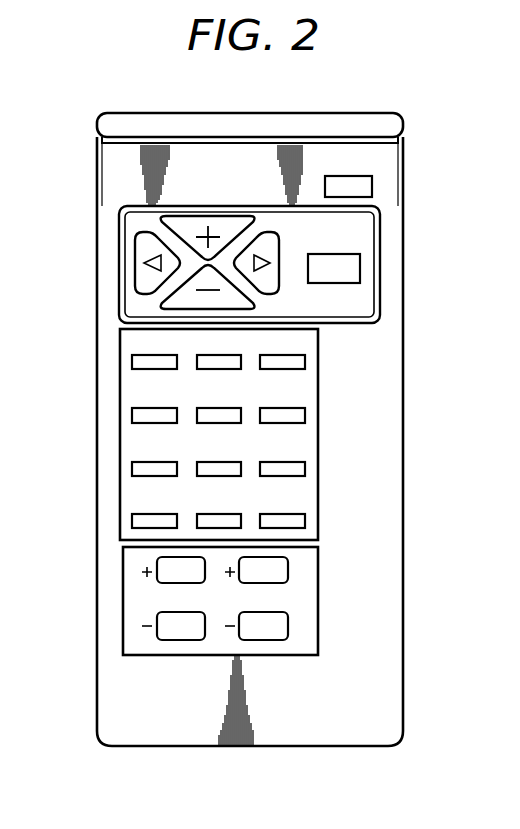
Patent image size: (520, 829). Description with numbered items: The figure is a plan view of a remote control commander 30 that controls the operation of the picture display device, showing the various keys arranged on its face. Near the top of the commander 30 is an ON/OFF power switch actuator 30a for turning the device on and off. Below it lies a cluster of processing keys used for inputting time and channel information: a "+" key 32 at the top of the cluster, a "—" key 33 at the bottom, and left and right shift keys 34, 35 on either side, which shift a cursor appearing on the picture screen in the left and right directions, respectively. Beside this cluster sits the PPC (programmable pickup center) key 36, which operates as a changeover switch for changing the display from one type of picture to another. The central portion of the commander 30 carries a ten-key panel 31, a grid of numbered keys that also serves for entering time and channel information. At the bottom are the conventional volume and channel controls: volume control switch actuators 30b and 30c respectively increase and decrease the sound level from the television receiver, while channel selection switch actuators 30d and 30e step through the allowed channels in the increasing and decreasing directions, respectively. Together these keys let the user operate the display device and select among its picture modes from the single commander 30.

The remote control commander 30 is at (269, 101).
The ON/OFF power switch actuator 30a is at (372, 186).
The volume control switch actuator 30b is at (157, 561).
The volume control switch actuator 30c is at (157, 617).
The channel selection switch actuator 30d is at (288, 575).
The channel selection switch actuator 30e is at (288, 627).
The ten-key panel 31 is at (101, 332).
The "+" key 32 is at (203, 218).
The "—" key 33 is at (173, 300).
The left shift key 34 is at (142, 245).
The right shift key 35 is at (268, 244).
The PPC (programmable pickup center) key 36 is at (361, 267).